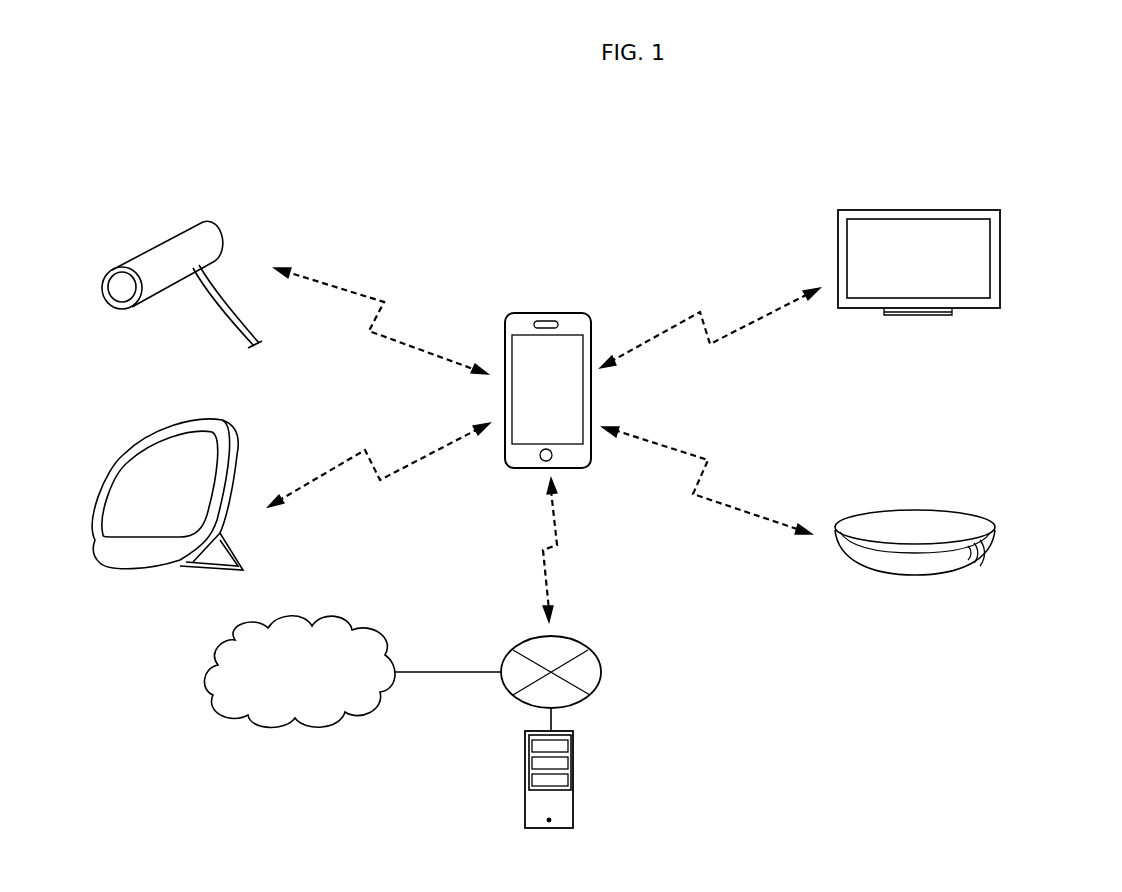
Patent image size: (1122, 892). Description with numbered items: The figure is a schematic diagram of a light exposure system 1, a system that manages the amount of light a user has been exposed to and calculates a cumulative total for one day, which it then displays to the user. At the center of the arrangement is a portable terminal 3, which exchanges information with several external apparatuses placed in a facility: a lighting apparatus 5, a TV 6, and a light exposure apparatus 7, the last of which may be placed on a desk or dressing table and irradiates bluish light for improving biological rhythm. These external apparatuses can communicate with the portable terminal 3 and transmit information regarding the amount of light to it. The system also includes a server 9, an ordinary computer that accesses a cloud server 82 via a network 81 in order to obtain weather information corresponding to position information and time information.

The light exposure system 1 is at (1046, 137).
The portable terminal 3 is at (583, 315).
The lighting apparatus 5 is at (943, 511).
The TV 6 is at (947, 210).
The light exposure apparatus 7 is at (215, 232).
The server 9 is at (573, 810).
The network 81 is at (601, 672).
The cloud server 82 is at (362, 708).